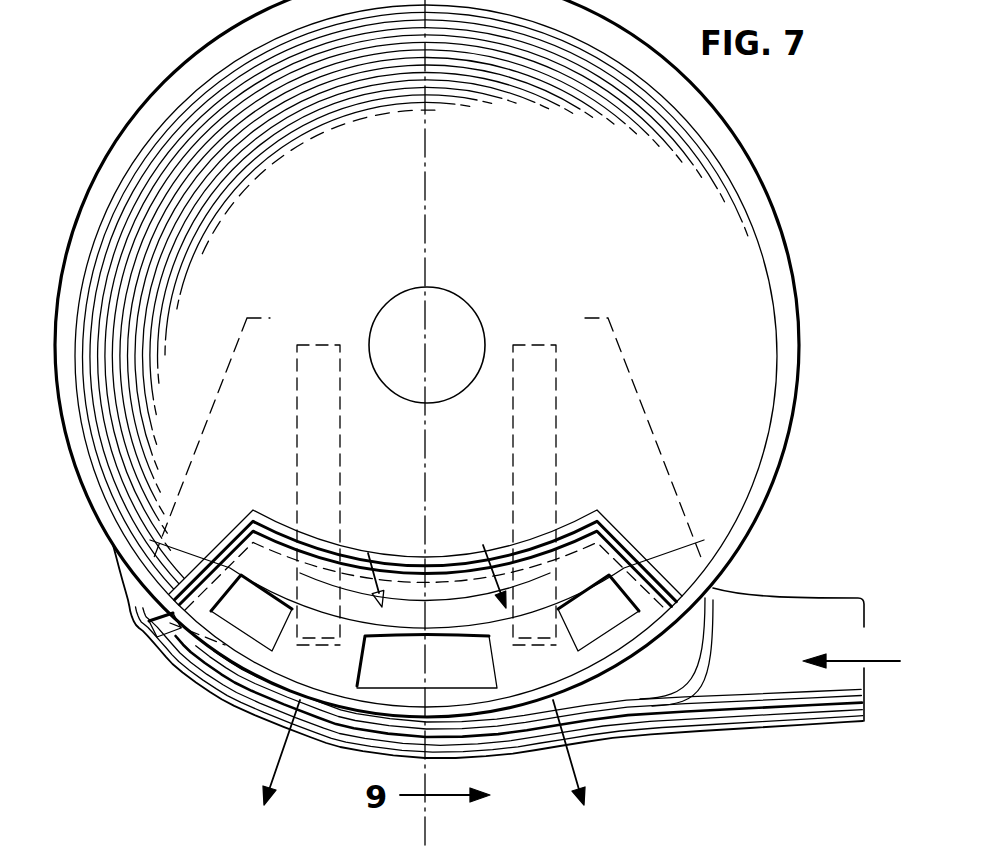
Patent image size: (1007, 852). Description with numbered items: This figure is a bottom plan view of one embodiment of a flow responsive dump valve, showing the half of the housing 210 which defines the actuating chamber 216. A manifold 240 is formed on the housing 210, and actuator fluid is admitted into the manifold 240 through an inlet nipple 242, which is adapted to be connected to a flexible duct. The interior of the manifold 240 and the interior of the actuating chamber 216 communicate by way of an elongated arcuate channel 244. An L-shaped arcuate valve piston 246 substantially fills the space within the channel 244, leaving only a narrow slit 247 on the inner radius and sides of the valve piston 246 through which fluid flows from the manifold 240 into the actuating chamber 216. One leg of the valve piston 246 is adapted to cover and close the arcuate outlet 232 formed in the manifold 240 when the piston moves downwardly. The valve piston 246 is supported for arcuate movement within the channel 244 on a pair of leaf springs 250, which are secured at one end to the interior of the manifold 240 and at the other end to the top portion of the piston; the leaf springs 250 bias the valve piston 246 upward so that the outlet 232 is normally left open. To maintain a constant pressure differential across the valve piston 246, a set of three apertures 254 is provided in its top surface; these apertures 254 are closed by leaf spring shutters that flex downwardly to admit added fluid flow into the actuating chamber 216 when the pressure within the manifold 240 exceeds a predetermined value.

The housing 210 is at (734, 143).
The actuating chamber 216 is at (548, 184).
The arcuate outlet 232 is at (376, 733).
The manifold 240 is at (138, 598).
The inlet nipple 242 is at (820, 724).
The elongated arcuate channel 244 is at (373, 566).
The L-shaped arcuate valve piston 246 is at (476, 567).
The narrow slit 247 is at (225, 545).
The leaf springs 250 is at (298, 470).
The apertures 254 is at (250, 622).